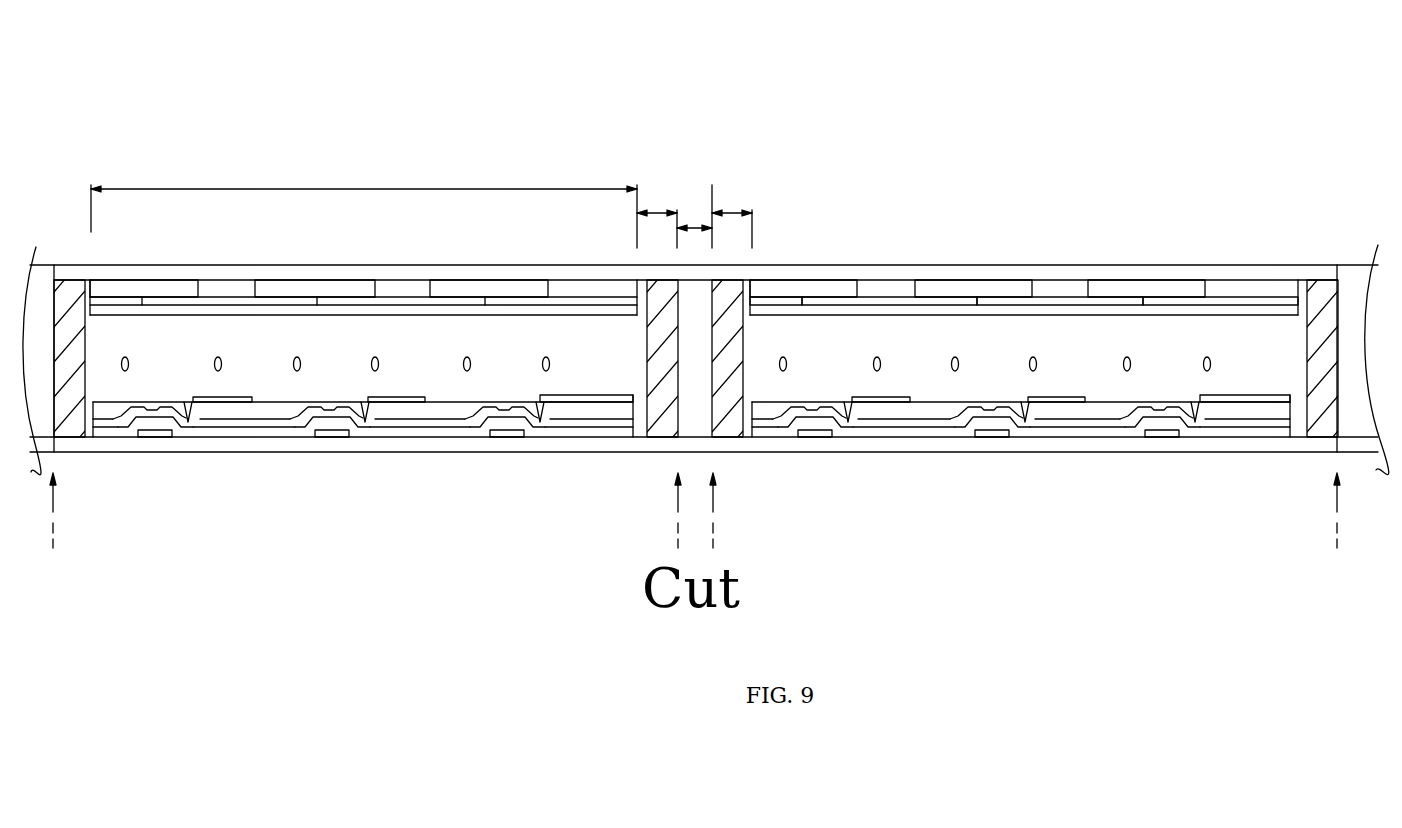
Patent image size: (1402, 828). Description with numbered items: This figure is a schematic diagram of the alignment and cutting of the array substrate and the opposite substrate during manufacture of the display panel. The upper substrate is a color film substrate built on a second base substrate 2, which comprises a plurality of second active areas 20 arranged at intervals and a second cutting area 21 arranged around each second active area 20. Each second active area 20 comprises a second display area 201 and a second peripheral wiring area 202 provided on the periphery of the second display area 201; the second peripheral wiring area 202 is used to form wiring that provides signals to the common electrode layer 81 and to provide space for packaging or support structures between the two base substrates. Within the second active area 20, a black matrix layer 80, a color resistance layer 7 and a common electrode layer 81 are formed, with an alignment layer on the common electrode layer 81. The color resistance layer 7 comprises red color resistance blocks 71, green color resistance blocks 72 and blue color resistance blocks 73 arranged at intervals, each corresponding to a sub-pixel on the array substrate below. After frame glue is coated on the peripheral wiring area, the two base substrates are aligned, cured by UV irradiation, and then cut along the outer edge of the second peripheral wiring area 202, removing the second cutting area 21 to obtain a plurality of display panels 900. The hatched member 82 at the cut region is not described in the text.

The second base substrate 2 is at (1270, 273).
The color resistance layer 7 is at (694, 222).
The second active area 20 is at (454, 142).
The second cutting area 21 is at (684, 160).
The red color resistance block 71 is at (892, 293).
The green color resistance block 72 is at (1060, 292).
The blue color resistance block 73 is at (1243, 292).
The black matrix layer 80 is at (802, 292).
The common electrode layer 81 is at (862, 310).
The sealant 82 is at (726, 388).
The second display area 201 is at (374, 184).
The second peripheral wiring area 202 is at (675, 162).
The display panel 900 is at (1007, 457).